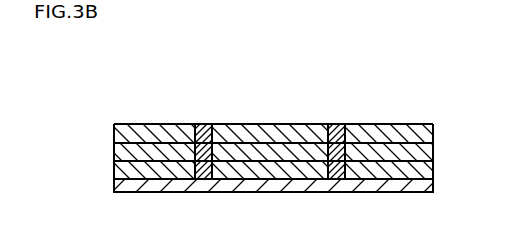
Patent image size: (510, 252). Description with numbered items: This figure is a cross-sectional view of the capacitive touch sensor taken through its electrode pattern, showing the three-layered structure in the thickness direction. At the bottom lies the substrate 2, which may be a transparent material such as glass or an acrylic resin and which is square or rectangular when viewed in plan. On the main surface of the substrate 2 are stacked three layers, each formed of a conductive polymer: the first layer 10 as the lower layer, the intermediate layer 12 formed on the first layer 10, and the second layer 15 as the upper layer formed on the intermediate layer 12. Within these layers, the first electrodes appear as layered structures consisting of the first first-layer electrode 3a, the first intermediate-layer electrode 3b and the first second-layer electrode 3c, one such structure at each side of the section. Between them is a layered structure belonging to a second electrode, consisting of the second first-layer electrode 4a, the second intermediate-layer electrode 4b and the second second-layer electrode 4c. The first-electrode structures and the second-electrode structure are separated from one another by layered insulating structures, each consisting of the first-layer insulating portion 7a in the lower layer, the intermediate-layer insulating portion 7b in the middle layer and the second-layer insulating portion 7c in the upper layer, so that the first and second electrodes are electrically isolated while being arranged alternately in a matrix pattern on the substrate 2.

The substrate 2 is at (434, 190).
The first first-layer electrode 3a is at (154, 176).
The first intermediate-layer electrode 3b is at (166, 152).
The first second-layer electrode 3c is at (131, 135).
The second first-layer electrode 4a is at (273, 176).
The second intermediate-layer electrode 4b is at (300, 152).
The second second-layer electrode 4c is at (262, 135).
The first-layer insulating portion 7a is at (205, 172).
The intermediate-layer insulating portion 7b is at (198, 150).
The second-layer insulating portion 7c is at (208, 131).
The first layer 10 is at (112, 176).
The intermediate layer 12 is at (112, 152).
The second layer 15 is at (112, 131).